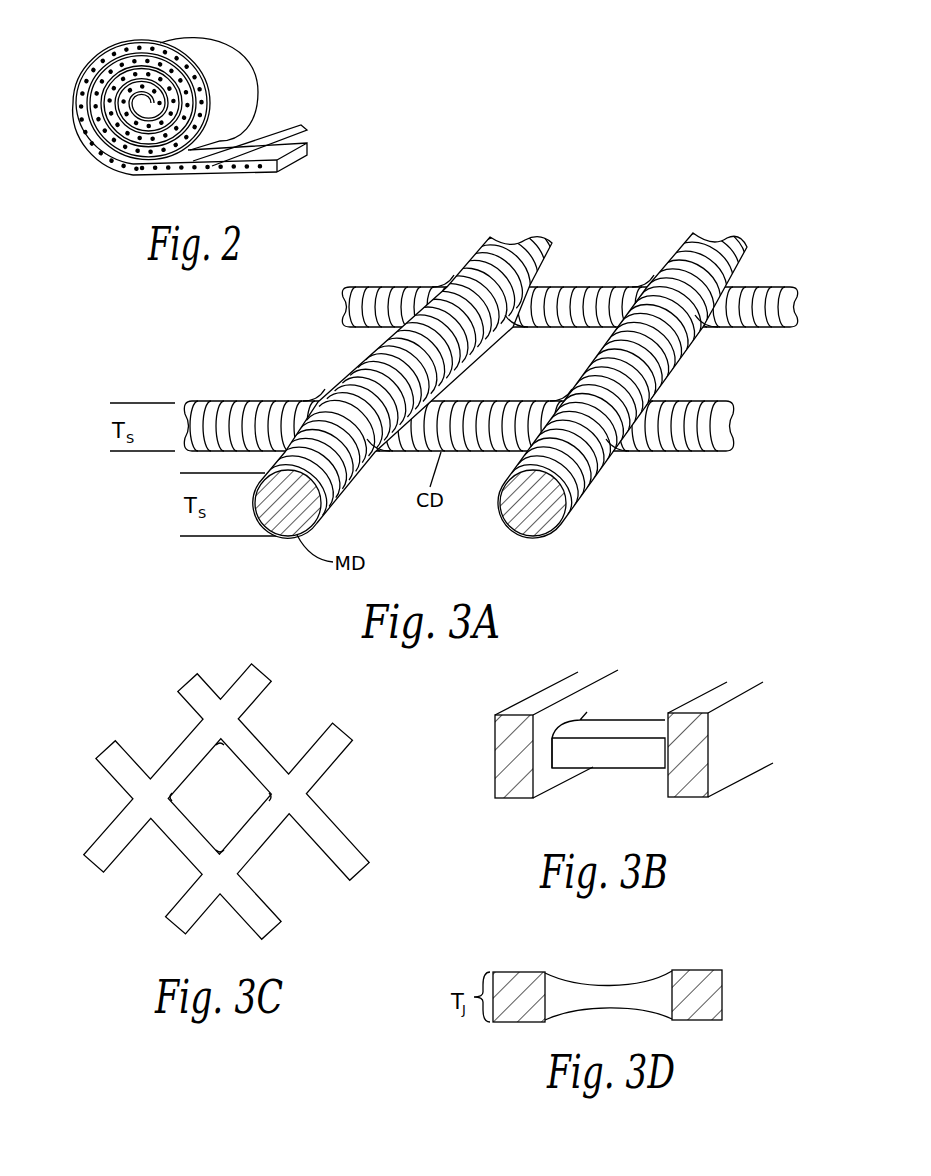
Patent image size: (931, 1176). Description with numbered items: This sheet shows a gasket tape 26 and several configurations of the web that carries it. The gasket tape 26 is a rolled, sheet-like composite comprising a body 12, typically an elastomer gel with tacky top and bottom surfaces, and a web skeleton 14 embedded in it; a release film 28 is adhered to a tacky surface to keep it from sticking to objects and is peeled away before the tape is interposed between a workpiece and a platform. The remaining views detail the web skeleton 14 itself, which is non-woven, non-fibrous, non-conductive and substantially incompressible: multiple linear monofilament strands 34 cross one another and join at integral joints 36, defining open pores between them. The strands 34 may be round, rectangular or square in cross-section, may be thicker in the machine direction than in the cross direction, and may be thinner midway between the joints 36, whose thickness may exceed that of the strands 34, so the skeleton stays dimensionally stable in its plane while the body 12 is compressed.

In FIG. 2, the body 12 is at (274, 173).
In FIG. 2, the web skeleton 14 is at (211, 174).
In FIG. 3A, the web skeleton 14 is at (490, 341).
In FIG. 3B, the web skeleton 14 is at (621, 708).
In FIG. 3C, the web skeleton 14 is at (216, 767).
In FIG. 2, the gasket tape 26 is at (265, 57).
In FIG. 2, the release film 28 is at (304, 130).
In FIG. 3A, the monofilament strands 34 is at (518, 327).
In FIG. 3B, the monofilament strands 34 is at (494, 763).
In FIG. 3C, the monofilament strands 34 is at (236, 700).
In FIG. 3D, the monofilament strands 34 is at (607, 985).
In FIG. 3A, the joints 36 is at (653, 397).
In FIG. 3B, the joints 36 is at (553, 762).
In FIG. 3C, the joints 36 is at (220, 745).
In FIG. 3D, the joints 36 is at (522, 972).